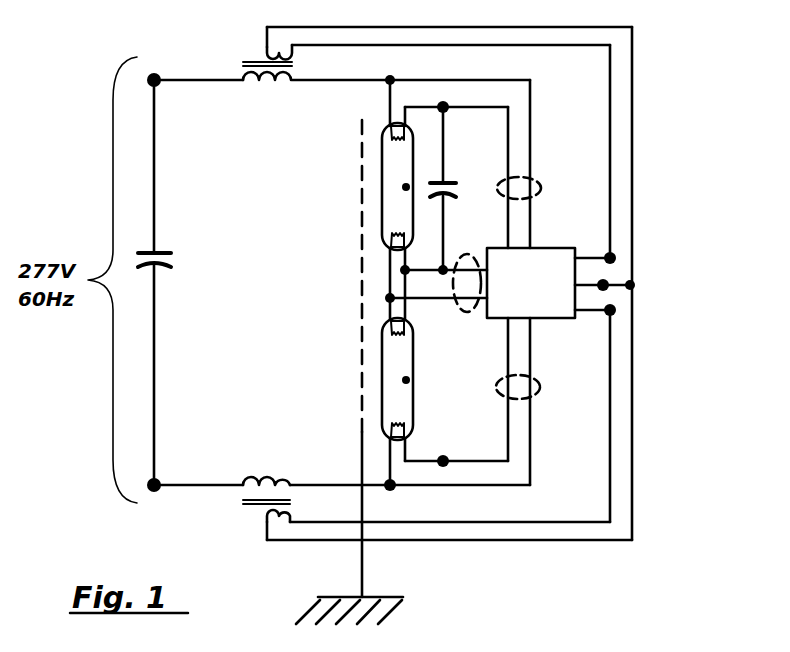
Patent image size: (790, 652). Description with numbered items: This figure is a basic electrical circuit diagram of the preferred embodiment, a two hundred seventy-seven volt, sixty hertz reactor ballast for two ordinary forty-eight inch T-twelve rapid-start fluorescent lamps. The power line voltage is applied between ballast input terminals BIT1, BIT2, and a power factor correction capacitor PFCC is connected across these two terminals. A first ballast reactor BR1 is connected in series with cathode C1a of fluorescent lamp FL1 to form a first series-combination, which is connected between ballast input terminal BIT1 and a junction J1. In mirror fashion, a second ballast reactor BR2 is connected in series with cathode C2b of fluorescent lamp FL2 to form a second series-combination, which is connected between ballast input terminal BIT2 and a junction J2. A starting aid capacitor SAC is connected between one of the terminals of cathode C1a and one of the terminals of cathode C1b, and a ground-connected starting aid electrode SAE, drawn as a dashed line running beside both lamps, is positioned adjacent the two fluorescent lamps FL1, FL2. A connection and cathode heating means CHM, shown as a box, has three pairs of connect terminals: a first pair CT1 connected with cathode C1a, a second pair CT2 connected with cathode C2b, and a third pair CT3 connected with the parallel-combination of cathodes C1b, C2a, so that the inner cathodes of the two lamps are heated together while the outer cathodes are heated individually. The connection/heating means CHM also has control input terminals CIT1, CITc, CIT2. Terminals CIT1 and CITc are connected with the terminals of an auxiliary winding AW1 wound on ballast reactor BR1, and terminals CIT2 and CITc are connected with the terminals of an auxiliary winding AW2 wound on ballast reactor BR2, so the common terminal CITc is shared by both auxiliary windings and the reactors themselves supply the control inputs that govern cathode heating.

The ballast input terminal BIT1 is at (163, 76).
The ballast input terminal BIT2 is at (162, 476).
The first ballast reactor BR1 is at (262, 92).
The second ballast reactor BR2 is at (268, 470).
The auxiliary winding AW1 is at (278, 48).
The auxiliary winding AW2 is at (275, 528).
The junction J1 is at (447, 100).
The junction J2 is at (446, 456).
The fluorescent lamp FL1 is at (378, 227).
The fluorescent lamp FL2 is at (378, 336).
The cathode C1a is at (400, 145).
The cathode C1b is at (398, 230).
The cathode C2a is at (398, 340).
The cathode C2b is at (398, 423).
The starting aid capacitor SAC is at (482, 175).
The power factor correction capacitor PFCC is at (170, 255).
The starting aid electrode SAE is at (360, 278).
The first pair of connect terminals CT1 is at (542, 186).
The second pair of connect terminals CT2 is at (540, 388).
The third pair of connect terminals CT3 is at (478, 310).
The connection and cathode heating means CHM is at (566, 297).
The control input terminal CIT1 is at (613, 252).
The common control input terminal CITc is at (608, 282).
The control input terminal CIT2 is at (614, 316).